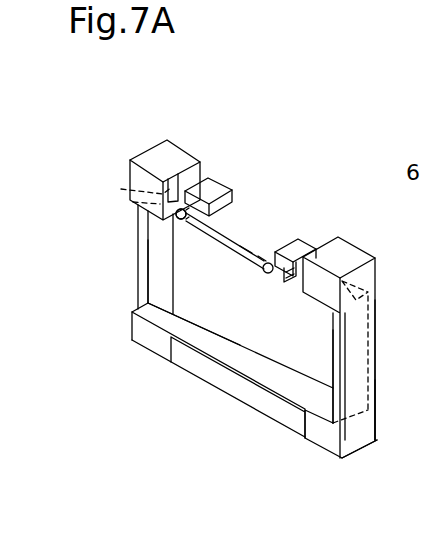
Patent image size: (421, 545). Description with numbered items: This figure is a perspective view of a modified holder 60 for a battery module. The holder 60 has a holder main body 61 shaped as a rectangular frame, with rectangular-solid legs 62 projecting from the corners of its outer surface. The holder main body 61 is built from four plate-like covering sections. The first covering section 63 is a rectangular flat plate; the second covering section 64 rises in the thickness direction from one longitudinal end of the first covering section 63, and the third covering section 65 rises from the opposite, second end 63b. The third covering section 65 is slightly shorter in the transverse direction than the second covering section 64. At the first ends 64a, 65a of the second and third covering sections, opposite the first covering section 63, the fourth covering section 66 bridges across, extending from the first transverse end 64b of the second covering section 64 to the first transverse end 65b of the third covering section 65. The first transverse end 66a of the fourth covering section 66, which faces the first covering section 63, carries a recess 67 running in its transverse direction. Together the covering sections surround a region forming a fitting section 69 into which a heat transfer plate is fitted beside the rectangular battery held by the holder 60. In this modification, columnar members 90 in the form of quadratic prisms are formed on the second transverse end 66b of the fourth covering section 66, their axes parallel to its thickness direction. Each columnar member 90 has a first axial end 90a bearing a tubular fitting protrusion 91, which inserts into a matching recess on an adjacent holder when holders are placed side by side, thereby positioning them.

The holder 60 is at (250, 130).
The holder main body 61 is at (378, 378).
The legs 62 is at (142, 173).
The first covering section 63 is at (260, 367).
The second end in the longitudinal direction of the first covering section 63b is at (161, 300).
The second covering section 64 is at (370, 292).
The first end in the longitudinal direction of the second covering section 64a is at (357, 352).
The first end in the transverse direction of the second covering section 64b is at (333, 355).
The third covering section 65 is at (148, 232).
The first end in the longitudinal direction of the third covering section 65a is at (121, 189).
The first end in the transverse direction of the third covering section 65b is at (143, 280).
The fourth covering section 66 is at (303, 280).
The first end in the transverse direction of the fourth covering section 66a is at (179, 226).
The second end in the transverse direction of the fourth covering section 66b is at (250, 240).
The recess 67 is at (267, 236).
The fitting section 69 is at (214, 350).
The columnar members 90 is at (206, 180).
The first end in the axial direction of the columnar member 90a is at (290, 274).
The fitting protrusion 91 is at (180, 207).